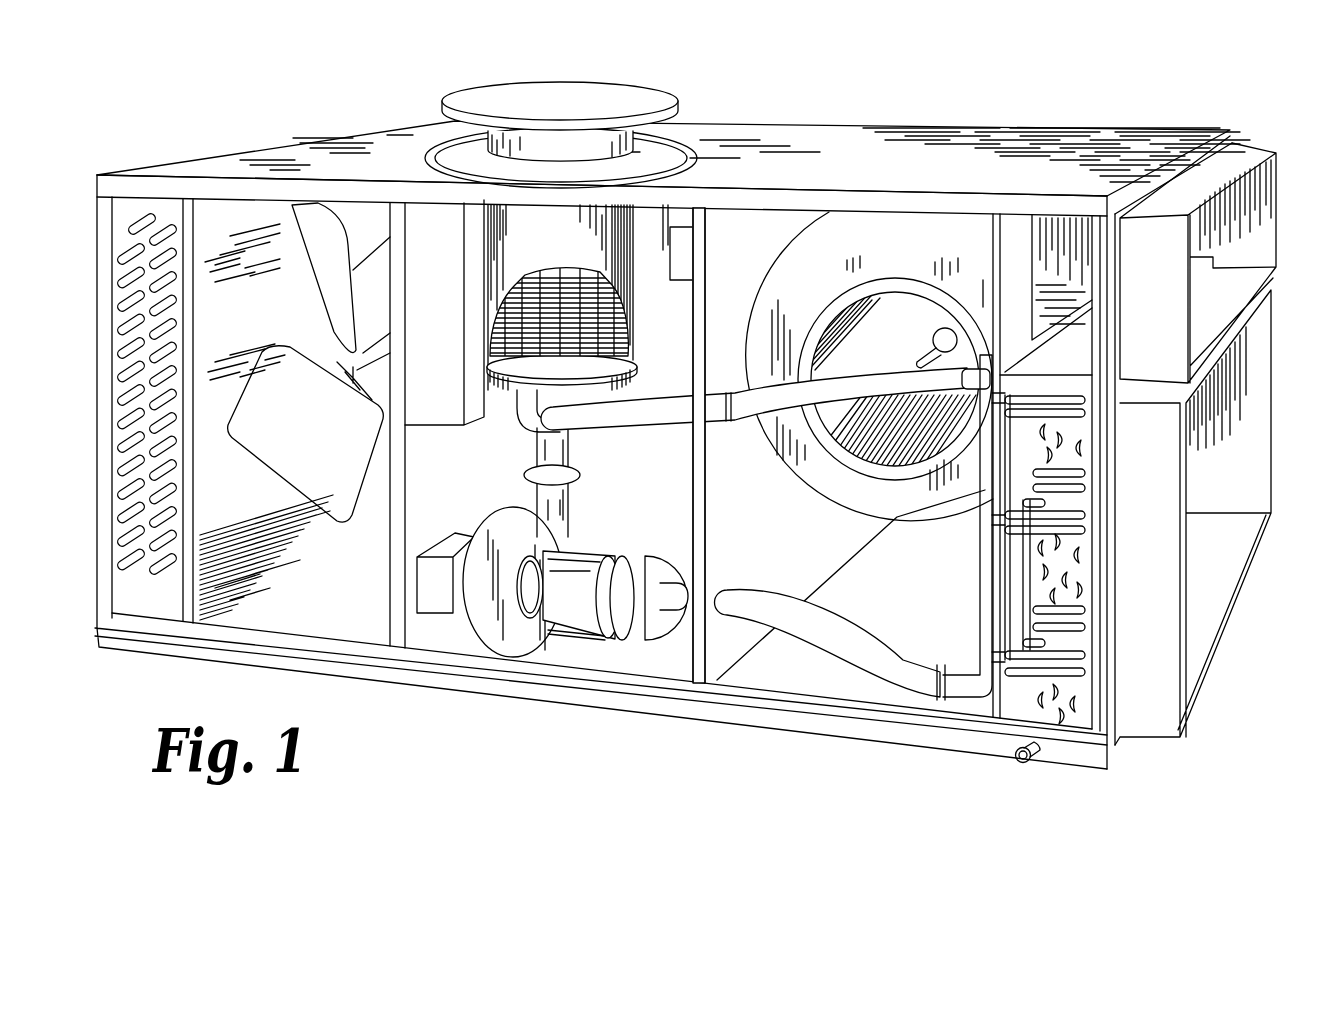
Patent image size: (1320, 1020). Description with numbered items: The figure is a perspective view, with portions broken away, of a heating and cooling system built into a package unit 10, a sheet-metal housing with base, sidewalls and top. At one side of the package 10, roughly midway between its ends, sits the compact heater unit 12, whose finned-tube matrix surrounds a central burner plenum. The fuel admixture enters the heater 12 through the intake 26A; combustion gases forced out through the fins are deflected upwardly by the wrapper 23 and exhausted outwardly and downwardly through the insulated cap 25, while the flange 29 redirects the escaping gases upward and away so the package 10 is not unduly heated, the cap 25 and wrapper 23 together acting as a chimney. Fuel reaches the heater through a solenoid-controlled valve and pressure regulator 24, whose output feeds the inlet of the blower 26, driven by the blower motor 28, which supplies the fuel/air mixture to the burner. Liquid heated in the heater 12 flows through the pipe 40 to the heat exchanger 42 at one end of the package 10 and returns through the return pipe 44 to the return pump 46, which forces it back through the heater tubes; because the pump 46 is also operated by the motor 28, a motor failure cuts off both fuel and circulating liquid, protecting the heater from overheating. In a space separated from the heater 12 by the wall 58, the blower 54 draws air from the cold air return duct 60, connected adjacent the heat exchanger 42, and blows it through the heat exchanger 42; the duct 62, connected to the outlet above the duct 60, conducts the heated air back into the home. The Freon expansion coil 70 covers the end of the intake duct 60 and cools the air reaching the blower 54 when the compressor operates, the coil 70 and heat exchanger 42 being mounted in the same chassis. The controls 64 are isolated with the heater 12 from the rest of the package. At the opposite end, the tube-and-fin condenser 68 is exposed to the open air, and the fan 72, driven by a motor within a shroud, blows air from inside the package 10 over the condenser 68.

The package unit 10 is at (782, 122).
The insulated cap 25 is at (534, 115).
The flange 29 is at (690, 150).
The wrapper 23 is at (533, 249).
The controls 64 is at (414, 299).
The wall 58 is at (727, 267).
The blower 54 is at (885, 254).
The duct 62 is at (1197, 307).
The Freon expansion coil 70 is at (1078, 388).
The fan 72 is at (278, 434).
The compact heater unit 12 is at (625, 391).
The intake 26A is at (535, 440).
The pipe 40 is at (750, 423).
The condenser 68 is at (140, 600).
The blower motor 28 is at (554, 594).
The blower 26 is at (491, 642).
The return pump 46 is at (647, 640).
The pressure regulator 24 is at (420, 598).
The return pipe 44 is at (908, 658).
The cold air return duct 60 is at (1193, 567).
The heat exchanger 42 is at (1058, 713).